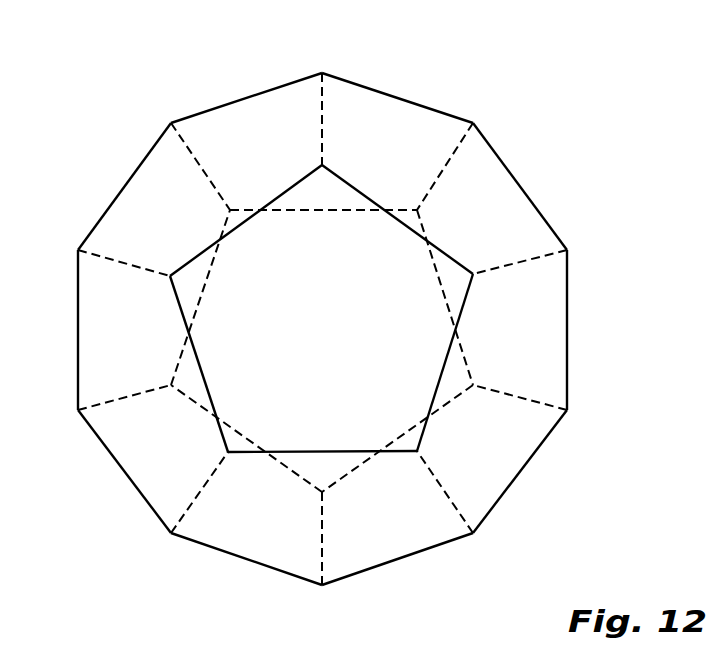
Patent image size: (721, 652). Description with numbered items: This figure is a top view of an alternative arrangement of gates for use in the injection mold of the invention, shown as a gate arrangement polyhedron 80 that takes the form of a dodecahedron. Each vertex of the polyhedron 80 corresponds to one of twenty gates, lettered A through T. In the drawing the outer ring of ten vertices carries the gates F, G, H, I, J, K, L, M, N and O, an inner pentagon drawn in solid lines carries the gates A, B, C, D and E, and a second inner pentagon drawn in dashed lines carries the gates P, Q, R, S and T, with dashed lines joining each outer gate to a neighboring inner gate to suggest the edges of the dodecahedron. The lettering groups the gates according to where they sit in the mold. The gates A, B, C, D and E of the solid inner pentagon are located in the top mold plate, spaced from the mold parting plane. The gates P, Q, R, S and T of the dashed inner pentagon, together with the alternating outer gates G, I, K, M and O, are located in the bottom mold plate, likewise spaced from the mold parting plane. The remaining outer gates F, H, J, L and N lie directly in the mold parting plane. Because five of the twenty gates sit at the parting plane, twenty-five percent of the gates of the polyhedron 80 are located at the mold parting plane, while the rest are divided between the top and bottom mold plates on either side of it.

The gate arrangement polyhedron 80 is at (578, 122).
The gate A is at (321, 165).
The gate B is at (474, 273).
The gate C is at (418, 452).
The gate D is at (228, 453).
The gate E is at (170, 277).
The gate F is at (322, 73).
The gate G is at (473, 122).
The gate H is at (567, 250).
The gate I is at (568, 410).
The gate J is at (473, 534).
The gate K is at (322, 586).
The gate L is at (171, 534).
The gate M is at (78, 410).
The gate N is at (78, 250).
The gate O is at (171, 123).
The gate P is at (417, 209).
The gate Q is at (475, 384).
The gate R is at (322, 493).
The gate S is at (171, 386).
The gate T is at (230, 210).